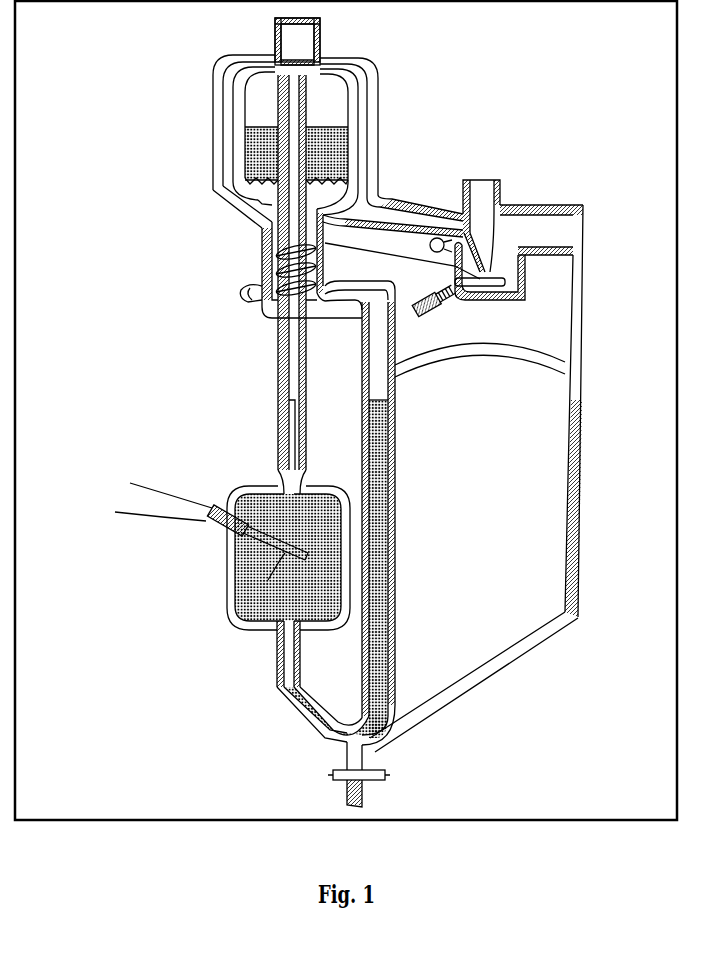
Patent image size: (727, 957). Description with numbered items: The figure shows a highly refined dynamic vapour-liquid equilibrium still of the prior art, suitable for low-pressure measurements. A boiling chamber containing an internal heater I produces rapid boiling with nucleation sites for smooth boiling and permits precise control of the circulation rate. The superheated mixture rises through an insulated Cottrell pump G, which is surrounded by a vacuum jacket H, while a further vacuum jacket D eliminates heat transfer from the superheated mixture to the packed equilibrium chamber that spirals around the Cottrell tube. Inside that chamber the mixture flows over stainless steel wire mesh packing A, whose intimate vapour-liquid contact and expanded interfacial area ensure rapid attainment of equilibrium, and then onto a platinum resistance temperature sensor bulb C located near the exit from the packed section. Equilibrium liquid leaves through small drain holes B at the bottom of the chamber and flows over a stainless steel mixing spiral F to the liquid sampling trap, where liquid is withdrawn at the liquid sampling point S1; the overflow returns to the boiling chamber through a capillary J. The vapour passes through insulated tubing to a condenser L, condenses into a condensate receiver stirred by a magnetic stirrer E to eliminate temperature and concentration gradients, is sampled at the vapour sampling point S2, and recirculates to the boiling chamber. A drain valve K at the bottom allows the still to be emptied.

The stainless steel wire mesh packing A is at (283, 131).
The drain holes B is at (283, 171).
The Pt-100 bulb C is at (273, 177).
The vacuum jacket D is at (245, 218).
The magnetic stirrer E is at (325, 243).
The stainless steel mixing spiral F is at (290, 277).
The insulated Cottrell pump G is at (290, 363).
The vacuum jacket H is at (272, 415).
The internal heater I is at (270, 587).
The capillary J is at (280, 657).
The drain valve K is at (340, 795).
The condenser L is at (480, 180).
The liquid sampling point S1 is at (236, 293).
The vapour sampling point S2 is at (429, 244).